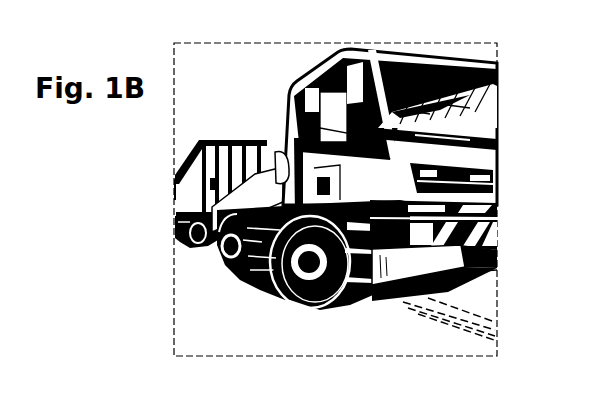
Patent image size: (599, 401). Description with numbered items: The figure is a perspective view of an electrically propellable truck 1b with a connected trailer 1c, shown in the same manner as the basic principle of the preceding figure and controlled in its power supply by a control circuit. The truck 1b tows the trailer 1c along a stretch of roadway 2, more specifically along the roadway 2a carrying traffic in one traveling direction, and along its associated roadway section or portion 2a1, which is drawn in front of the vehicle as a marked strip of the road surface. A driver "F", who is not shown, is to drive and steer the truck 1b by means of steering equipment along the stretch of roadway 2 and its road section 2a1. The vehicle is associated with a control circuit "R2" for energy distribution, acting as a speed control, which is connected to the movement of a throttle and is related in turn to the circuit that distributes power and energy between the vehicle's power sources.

The truck 1b is at (324, 70).
The trailer 1c is at (233, 140).
The driver F is at (478, 104).
The stretch of roadway 2 is at (355, 198).
The control circuit for energy distribution R2 is at (279, 296).
The roadway in one traveling direction 2a is at (490, 304).
The roadway section in one traveling direction 2a1 is at (450, 318).